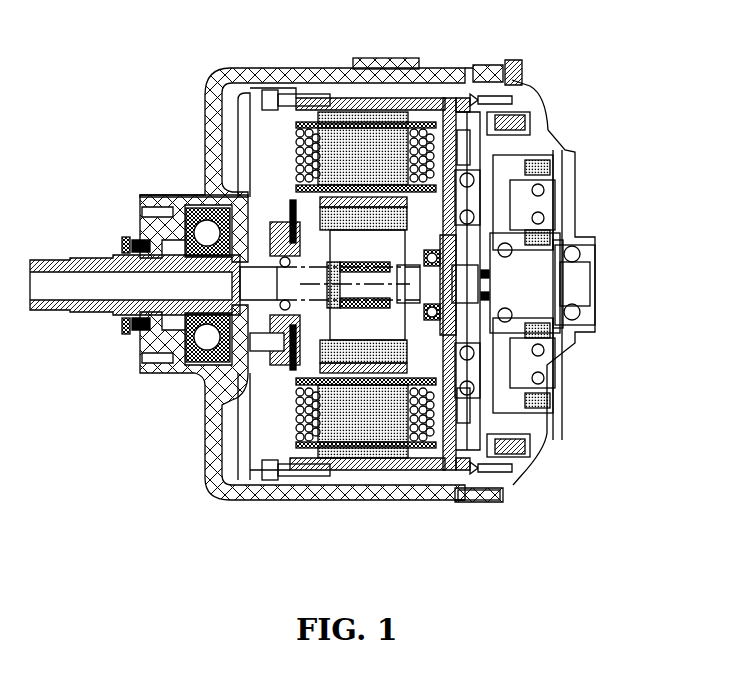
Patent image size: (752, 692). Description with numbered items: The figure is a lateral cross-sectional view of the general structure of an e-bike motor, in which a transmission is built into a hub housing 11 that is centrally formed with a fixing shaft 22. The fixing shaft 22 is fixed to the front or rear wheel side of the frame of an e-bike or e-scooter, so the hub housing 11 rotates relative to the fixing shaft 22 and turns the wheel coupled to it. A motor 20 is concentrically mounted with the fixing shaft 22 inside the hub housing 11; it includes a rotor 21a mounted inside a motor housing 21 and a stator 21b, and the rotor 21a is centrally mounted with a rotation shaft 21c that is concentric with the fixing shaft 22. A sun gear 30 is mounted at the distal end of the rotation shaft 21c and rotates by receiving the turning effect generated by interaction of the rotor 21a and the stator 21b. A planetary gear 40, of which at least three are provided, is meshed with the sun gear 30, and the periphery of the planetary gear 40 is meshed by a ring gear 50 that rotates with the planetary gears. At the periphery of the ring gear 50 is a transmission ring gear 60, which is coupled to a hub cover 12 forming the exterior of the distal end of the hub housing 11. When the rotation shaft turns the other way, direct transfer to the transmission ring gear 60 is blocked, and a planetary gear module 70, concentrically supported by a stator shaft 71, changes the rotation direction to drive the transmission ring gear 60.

The hub housing 11 is at (337, 70).
The hub cover 12 is at (570, 200).
The motor 20 is at (240, 100).
The motor housing 21 is at (359, 296).
The rotor 21a is at (348, 380).
The stator 21b is at (380, 345).
The rotation shaft 21c is at (432, 290).
The fixing shaft 22 is at (103, 312).
The sun gear 30 is at (463, 300).
The planetary gear 40 is at (470, 152).
The ring gear 50 is at (464, 120).
The transmission ring gear 60 is at (545, 178).
The planetary gear module 70 is at (572, 218).
The stator shaft 71 is at (572, 277).